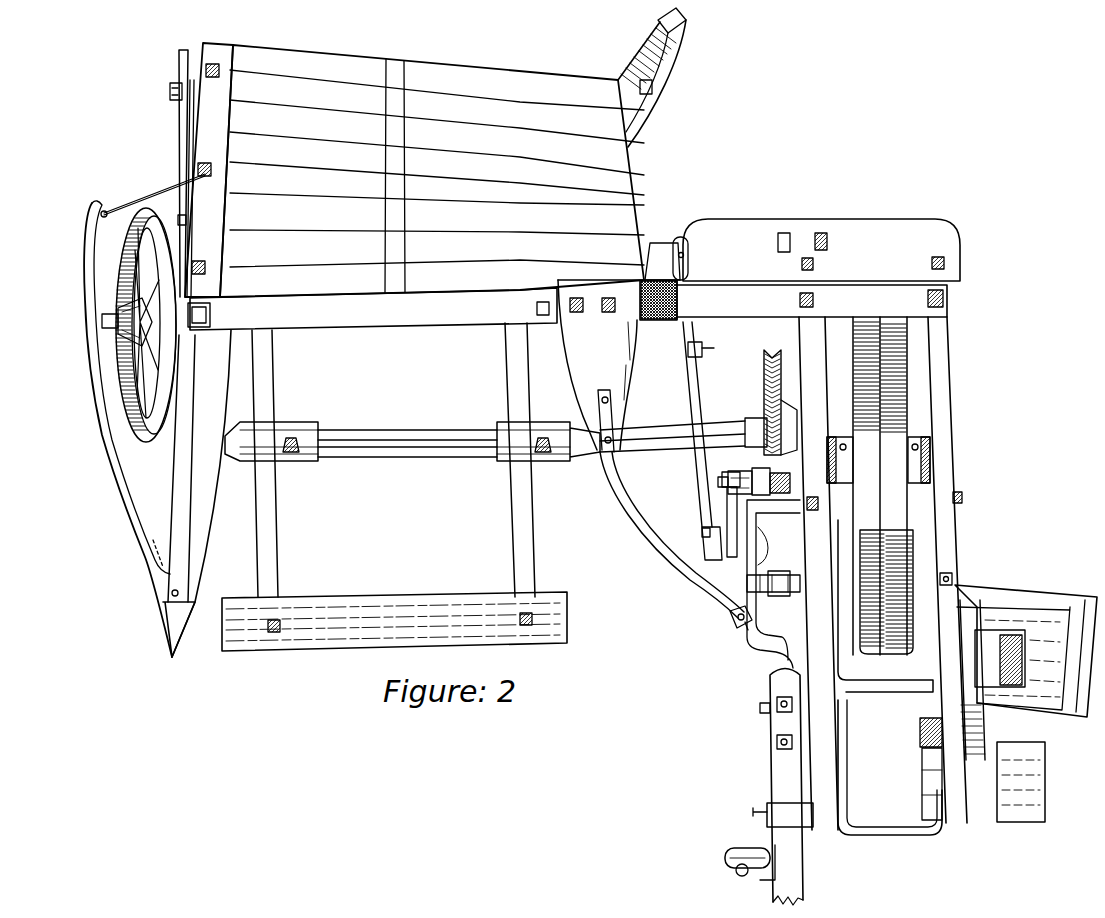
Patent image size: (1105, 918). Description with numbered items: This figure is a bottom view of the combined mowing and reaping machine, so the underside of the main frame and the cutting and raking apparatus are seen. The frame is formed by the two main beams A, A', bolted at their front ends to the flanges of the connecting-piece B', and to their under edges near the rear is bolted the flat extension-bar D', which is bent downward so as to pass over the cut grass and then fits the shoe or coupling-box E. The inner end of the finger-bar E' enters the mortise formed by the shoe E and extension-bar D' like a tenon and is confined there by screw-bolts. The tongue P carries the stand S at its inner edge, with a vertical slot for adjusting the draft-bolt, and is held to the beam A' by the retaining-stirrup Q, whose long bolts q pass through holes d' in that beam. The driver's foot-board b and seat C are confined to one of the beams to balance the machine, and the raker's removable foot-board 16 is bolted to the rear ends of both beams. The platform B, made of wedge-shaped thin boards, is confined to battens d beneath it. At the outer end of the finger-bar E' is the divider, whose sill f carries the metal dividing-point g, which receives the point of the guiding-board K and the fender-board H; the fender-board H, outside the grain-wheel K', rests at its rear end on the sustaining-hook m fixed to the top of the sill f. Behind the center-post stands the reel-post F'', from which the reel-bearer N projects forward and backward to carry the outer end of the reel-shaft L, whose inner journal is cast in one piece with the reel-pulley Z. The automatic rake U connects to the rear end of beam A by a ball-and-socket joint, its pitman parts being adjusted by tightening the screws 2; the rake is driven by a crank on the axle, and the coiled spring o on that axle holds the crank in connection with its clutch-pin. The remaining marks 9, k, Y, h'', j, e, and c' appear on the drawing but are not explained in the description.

The platform B is at (414, 170).
The holes d' is at (395, 176).
The curved chute 9 is at (652, 77).
The finger-bar E' is at (373, 309).
The reel-shaft L is at (496, 432).
The reel-bearer N is at (182, 173).
The coiled spring o is at (185, 100).
The sustaining-hook m is at (153, 195).
The guide block k is at (177, 220).
The fender-board H is at (128, 429).
The grain-wheel K' is at (139, 325).
The guiding-board K is at (201, 476).
The sill f is at (181, 468).
The dividing-point g is at (179, 623).
The battens d is at (167, 545).
The raker's foot-board 16 is at (821, 250).
The automatic rake U is at (666, 258).
The extension-bar D' is at (812, 301).
The shoe or coupling-box E is at (617, 366).
The reel-post F'' is at (676, 541).
The rod Y is at (702, 441).
The screws 2 is at (712, 347).
The bar h'' is at (731, 514).
The gear j is at (749, 475).
The reel-pulley Z is at (774, 402).
The main beam A' is at (818, 573).
The main beam A is at (947, 570).
The connecting-piece B' is at (890, 767).
The seat C is at (1026, 651).
The post e is at (972, 680).
The driver's foot-board b is at (982, 770).
The tongue P is at (786, 787).
The tab c' is at (760, 708).
The retaining-stirrup Q is at (790, 815).
The long bolts q is at (754, 821).
The stand S is at (750, 857).